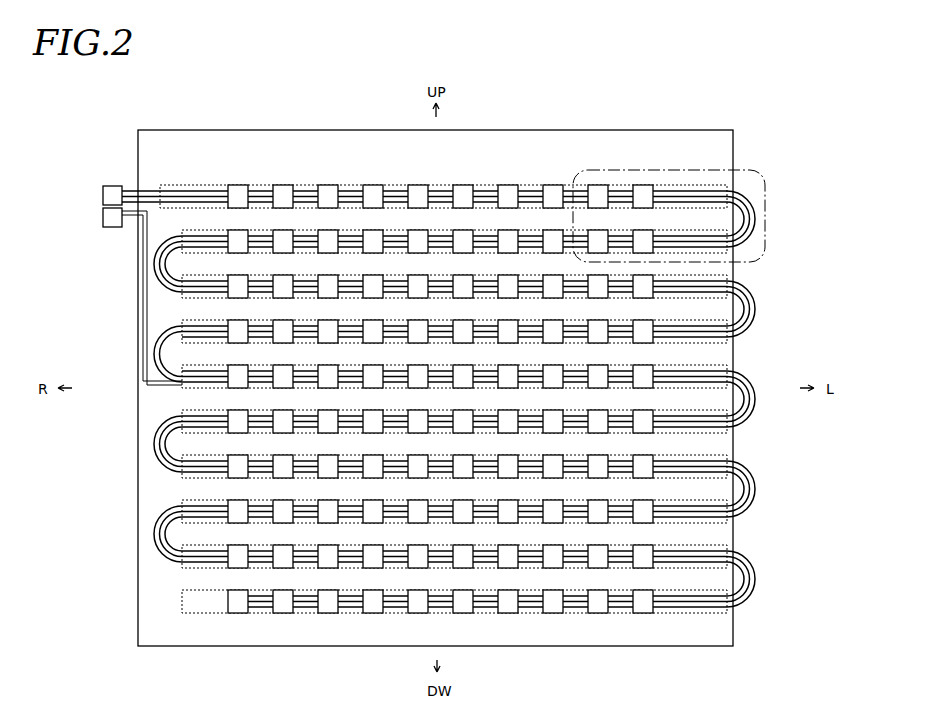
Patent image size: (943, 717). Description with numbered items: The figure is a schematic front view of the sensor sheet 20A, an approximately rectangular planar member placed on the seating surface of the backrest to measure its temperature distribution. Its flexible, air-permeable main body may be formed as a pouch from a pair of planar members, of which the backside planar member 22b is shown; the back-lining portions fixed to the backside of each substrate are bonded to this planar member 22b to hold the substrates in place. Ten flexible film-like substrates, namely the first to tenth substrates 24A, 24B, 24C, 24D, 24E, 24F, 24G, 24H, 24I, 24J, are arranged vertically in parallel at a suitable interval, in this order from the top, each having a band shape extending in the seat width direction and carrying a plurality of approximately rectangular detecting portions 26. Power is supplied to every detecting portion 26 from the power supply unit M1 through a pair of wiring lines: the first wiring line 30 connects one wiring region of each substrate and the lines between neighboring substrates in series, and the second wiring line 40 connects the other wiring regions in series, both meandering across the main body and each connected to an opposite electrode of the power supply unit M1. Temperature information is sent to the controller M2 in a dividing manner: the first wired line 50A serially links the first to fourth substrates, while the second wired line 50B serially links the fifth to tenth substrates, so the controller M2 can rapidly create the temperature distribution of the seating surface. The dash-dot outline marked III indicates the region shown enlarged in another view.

The sensor sheet 20A is at (682, 122).
The planar member 22b is at (163, 625).
The first substrate 24A is at (466, 155).
The second substrate 24B is at (720, 257).
The third substrate 24C is at (700, 273).
The fourth substrate 24D is at (720, 348).
The fifth substrate 24E is at (700, 362).
The sixth substrate 24F is at (720, 438).
The seventh substrate 24G is at (700, 453).
The eighth substrate 24H is at (720, 528).
The ninth substrate 24I is at (700, 543).
The tenth substrate 24J is at (720, 618).
The detecting portion 26 is at (238, 208).
The first wiring line 30 is at (153, 191).
The second wiring line 40 is at (179, 180).
The first wired line 50A is at (158, 215).
The second wired line 50B is at (143, 293).
The power supply unit M1 is at (103, 197).
The controller M2 is at (103, 217).
The section III detail region III is at (770, 179).